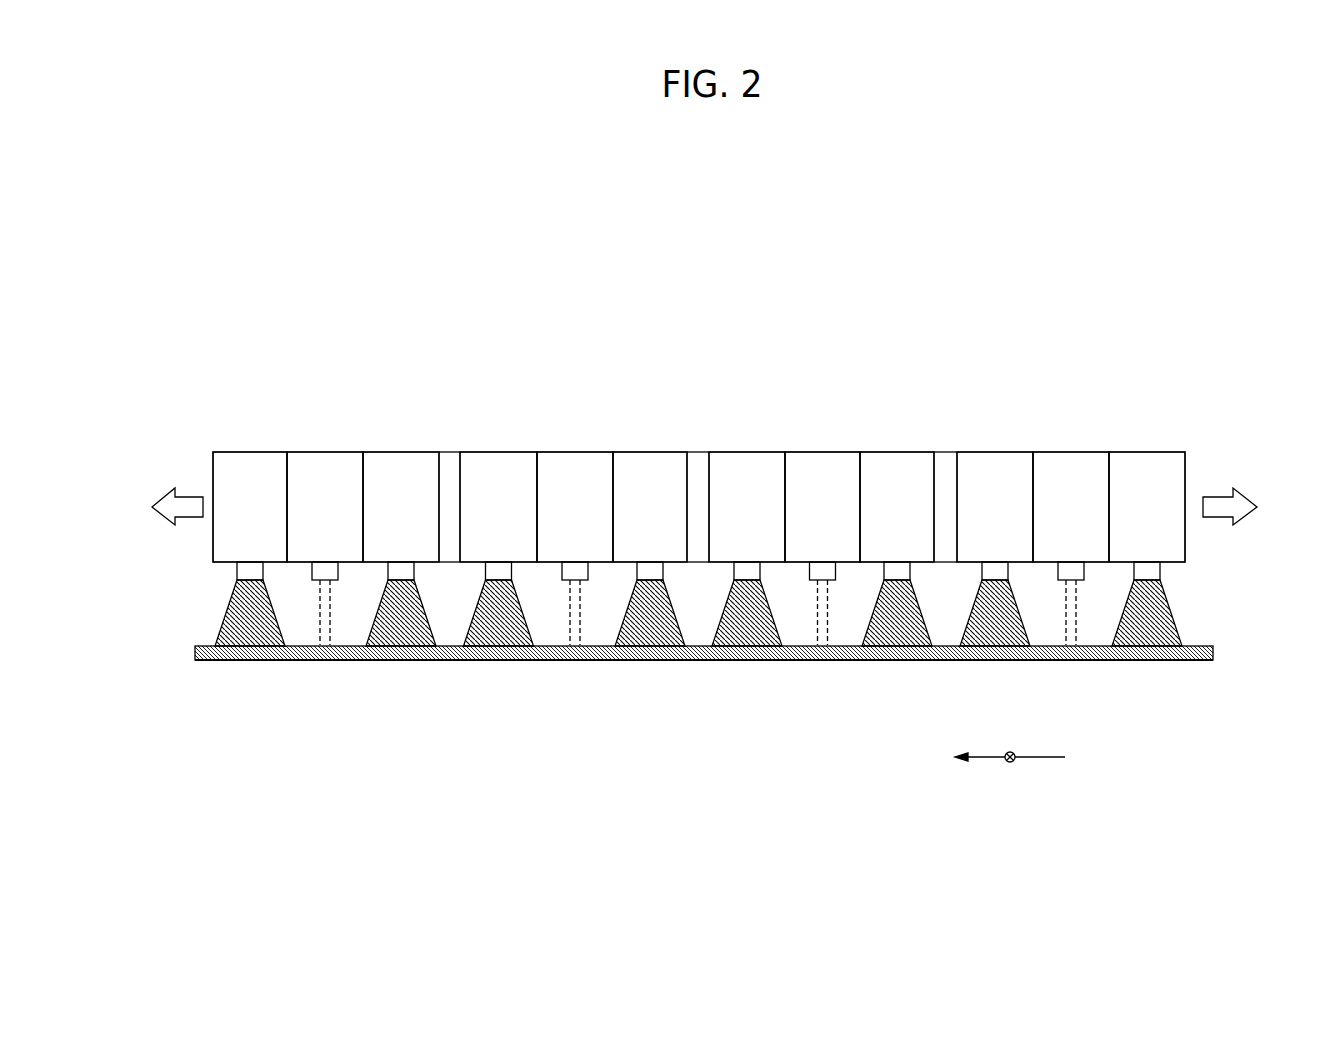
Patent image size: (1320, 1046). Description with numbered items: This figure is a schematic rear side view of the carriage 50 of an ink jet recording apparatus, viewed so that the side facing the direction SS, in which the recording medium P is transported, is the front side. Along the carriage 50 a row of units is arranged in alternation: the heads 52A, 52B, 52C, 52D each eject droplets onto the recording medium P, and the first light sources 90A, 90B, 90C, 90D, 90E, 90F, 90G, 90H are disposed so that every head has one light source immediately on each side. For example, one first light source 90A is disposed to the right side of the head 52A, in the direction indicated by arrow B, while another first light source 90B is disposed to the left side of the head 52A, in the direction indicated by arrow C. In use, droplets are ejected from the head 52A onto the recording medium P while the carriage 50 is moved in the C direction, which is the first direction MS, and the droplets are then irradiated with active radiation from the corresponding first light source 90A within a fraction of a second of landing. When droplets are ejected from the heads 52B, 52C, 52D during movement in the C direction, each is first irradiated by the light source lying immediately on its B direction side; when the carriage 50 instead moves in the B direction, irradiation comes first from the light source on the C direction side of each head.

The carriage 50 is at (684, 337).
The first light source 90A is at (1155, 433).
The first light source 90B is at (996, 433).
The first light source 90C is at (903, 433).
The first light source 90D is at (747, 433).
The first light source 90E is at (653, 433).
The first light source 90F is at (500, 433).
The first light source 90G is at (408, 433).
The first light source 90H is at (260, 433).
The head 52A is at (1069, 433).
The head 52B is at (823, 433).
The head 52C is at (577, 433).
The head 52D is at (327, 433).
The recording medium P is at (772, 661).
The first direction MS is at (993, 758).
The direction of transport SS is at (1009, 764).
The arrow C (C direction) C is at (177, 477).
The arrow B (B direction) B is at (1230, 477).